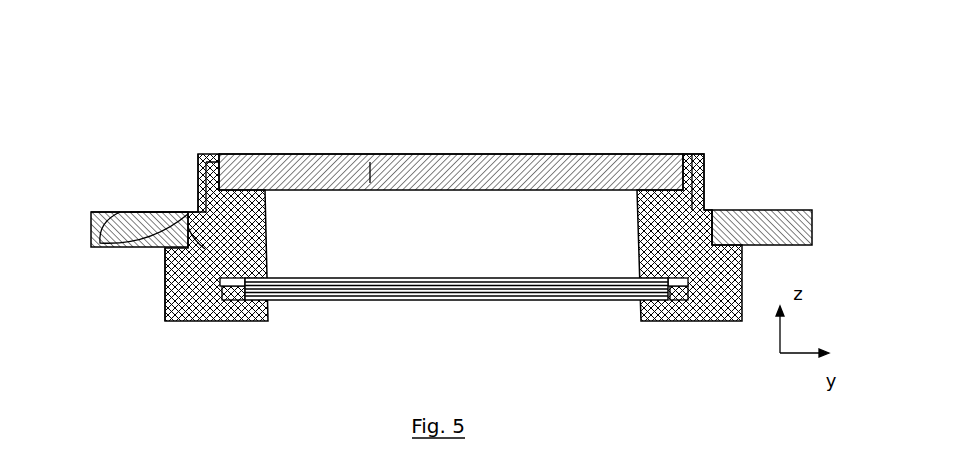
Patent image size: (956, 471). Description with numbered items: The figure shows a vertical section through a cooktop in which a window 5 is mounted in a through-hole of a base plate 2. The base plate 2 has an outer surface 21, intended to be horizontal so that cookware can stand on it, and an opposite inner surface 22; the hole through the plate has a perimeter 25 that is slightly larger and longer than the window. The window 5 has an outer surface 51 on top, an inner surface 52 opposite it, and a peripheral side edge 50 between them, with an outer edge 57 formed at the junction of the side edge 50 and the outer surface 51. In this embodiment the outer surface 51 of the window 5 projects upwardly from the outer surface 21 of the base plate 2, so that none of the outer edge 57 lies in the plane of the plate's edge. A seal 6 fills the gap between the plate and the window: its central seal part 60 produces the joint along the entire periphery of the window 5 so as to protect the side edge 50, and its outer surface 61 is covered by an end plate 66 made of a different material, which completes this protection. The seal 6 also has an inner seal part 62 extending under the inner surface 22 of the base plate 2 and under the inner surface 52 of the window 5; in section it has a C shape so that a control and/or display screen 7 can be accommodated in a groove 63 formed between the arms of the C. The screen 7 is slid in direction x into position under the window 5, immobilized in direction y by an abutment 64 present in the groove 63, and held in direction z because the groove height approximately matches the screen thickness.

The base plate 2 is at (150, 212).
The window 5 is at (563, 155).
The seal 6 is at (203, 104).
The control and/or display screen 7 is at (423, 300).
The outer surface 21 is at (103, 212).
The inner surface 22 is at (127, 212).
The perimeter 25 is at (92, 228).
The side edge 50 is at (222, 174).
The outer surface 51 is at (322, 155).
The inner surface 52 is at (387, 155).
The outer edge 57 is at (220, 155).
The central seal part 60 is at (163, 257).
The outer surface 61 is at (799, 157).
The inner seal part 62 is at (123, 322).
The groove 63 is at (228, 300).
The abutment 64 is at (710, 210).
The end plate 66 is at (693, 154).